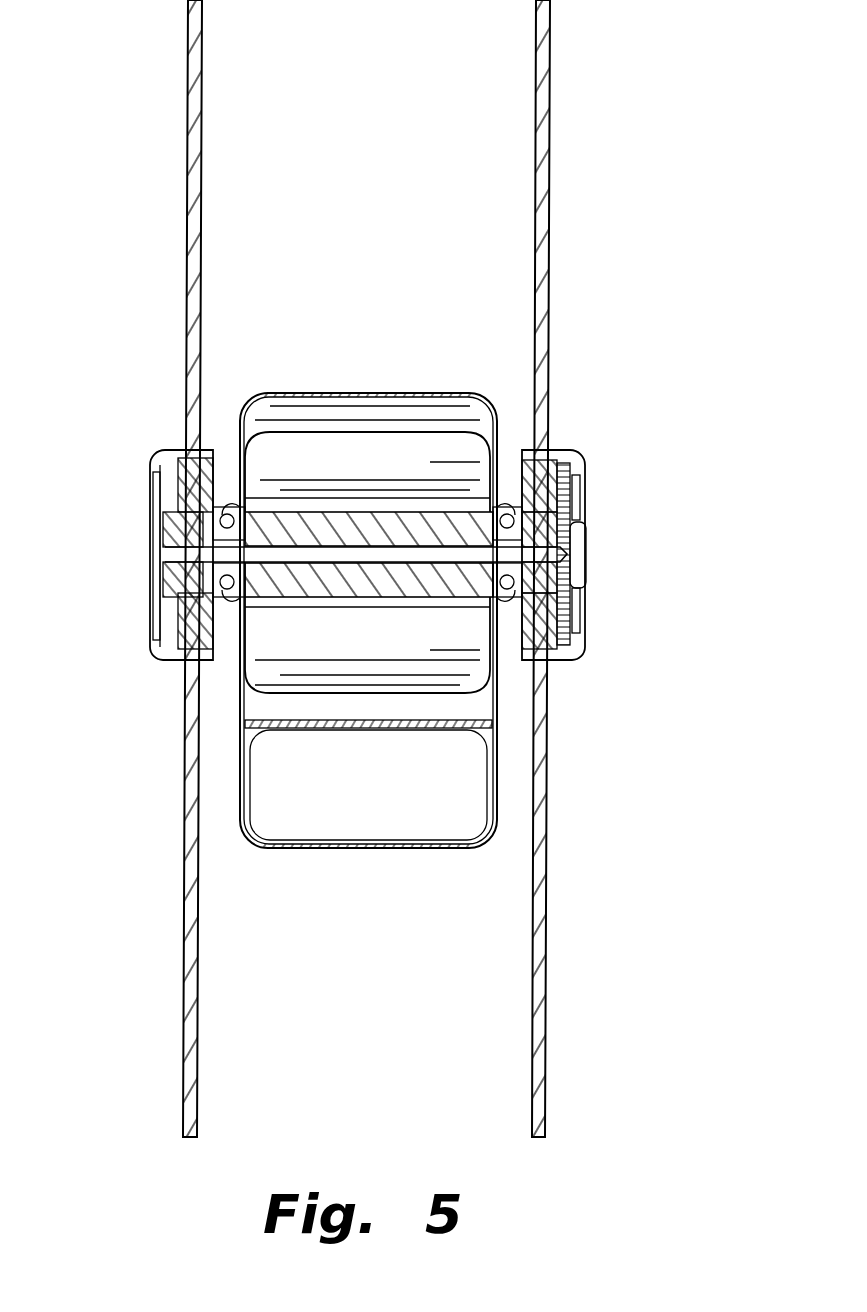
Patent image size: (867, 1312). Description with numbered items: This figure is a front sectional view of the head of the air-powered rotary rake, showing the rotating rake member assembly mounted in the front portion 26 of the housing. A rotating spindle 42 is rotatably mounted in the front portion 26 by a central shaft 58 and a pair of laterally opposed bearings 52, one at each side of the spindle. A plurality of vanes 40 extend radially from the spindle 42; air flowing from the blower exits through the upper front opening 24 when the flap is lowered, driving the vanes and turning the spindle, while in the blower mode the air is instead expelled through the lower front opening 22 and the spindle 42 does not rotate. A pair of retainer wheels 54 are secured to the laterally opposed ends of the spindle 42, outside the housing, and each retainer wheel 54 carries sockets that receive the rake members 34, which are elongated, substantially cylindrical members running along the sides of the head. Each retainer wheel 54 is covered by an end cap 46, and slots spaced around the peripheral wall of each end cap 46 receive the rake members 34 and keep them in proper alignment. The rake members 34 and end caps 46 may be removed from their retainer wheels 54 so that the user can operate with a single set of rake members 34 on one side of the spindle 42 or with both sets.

The lower front opening 22 is at (405, 822).
The upper front opening 24 is at (240, 710).
The front portion 26 is at (327, 888).
The rake member 34 is at (188, 68).
The vane 40 is at (287, 452).
The spindle 42 is at (384, 525).
The end cap 46 is at (585, 495).
The bearing 52 is at (187, 660).
The retainer wheel 54 is at (563, 592).
The central shaft 58 is at (565, 553).